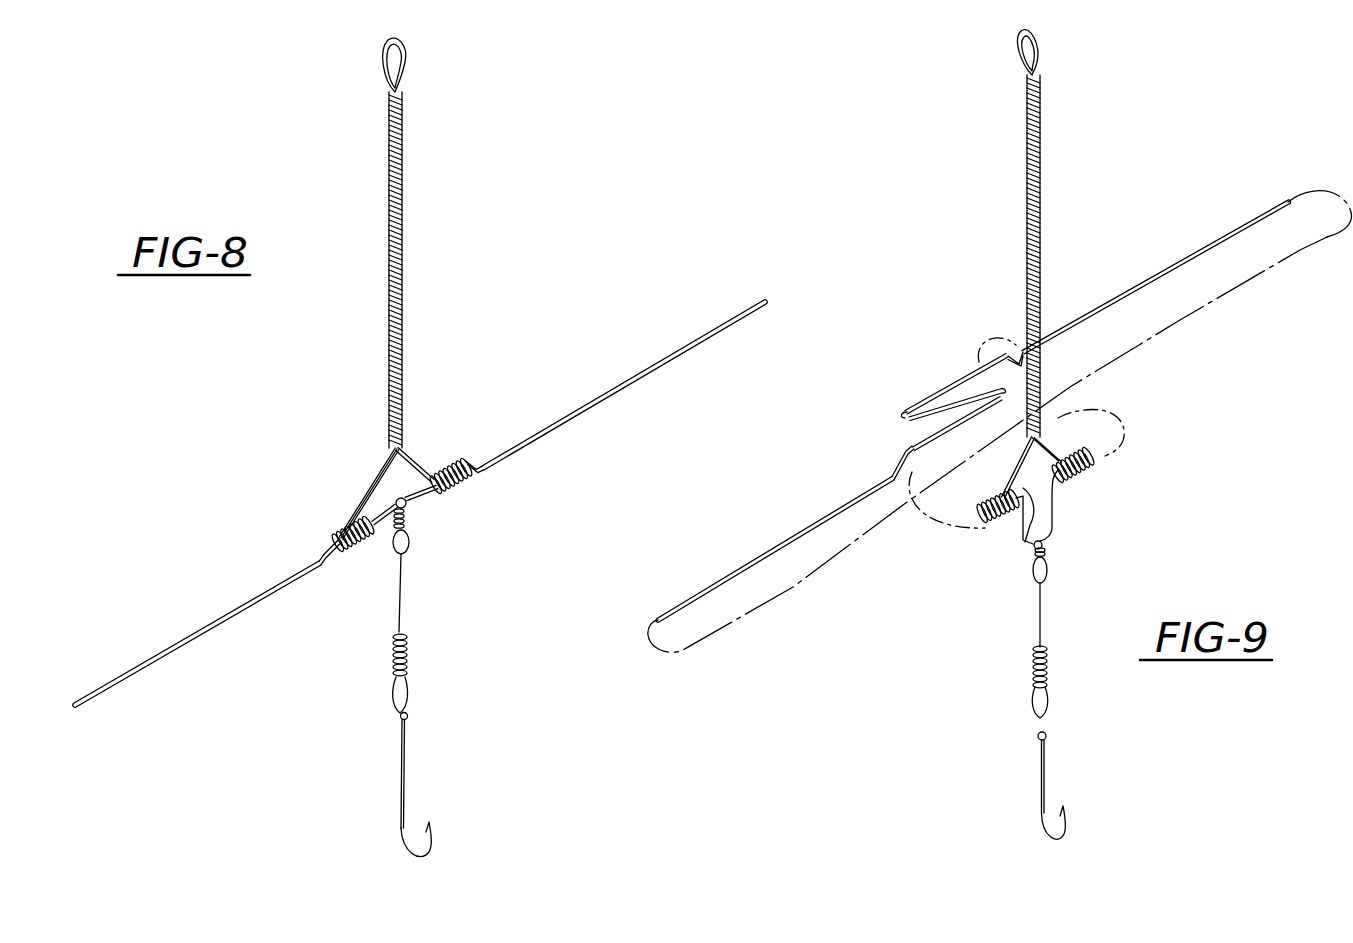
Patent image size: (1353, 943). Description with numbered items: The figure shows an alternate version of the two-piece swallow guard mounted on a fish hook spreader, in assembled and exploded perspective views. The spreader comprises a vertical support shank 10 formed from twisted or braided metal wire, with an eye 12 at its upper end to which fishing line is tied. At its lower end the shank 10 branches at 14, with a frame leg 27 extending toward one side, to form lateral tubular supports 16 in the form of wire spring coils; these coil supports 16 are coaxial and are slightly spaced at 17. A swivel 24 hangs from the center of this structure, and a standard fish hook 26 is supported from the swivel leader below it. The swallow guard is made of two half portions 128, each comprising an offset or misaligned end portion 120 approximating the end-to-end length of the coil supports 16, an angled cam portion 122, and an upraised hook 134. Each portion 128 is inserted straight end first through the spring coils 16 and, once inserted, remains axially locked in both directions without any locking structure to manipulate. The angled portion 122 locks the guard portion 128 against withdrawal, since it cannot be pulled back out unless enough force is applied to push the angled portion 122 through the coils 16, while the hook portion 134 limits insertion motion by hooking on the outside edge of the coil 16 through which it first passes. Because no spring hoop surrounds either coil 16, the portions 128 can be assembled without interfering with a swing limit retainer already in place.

In FIG. 8, the vertical support shank 10 is at (403, 205).
In FIG. 9, the vertical support shank 10 is at (1040, 193).
In FIG. 8, the eye 12 is at (407, 62).
In FIG. 9, the eye 12 is at (1038, 48).
In FIG. 8, the branch point 14 is at (424, 457).
In FIG. 9, the branch point 14 is at (1032, 467).
In FIG. 9, the lateral tubular supports 16 is at (1086, 470).
In FIG. 8, the spacing between coil supports 17 is at (378, 527).
In FIG. 9, the spacing between coil supports 17 is at (1022, 522).
In FIG. 8, the swivel 24 is at (393, 553).
In FIG. 9, the swivel 24 is at (1049, 576).
In FIG. 8, the fish hook 26 is at (409, 752).
In FIG. 9, the fish hook 26 is at (1047, 760).
In FIG. 8, the frame leg 27 is at (396, 470).
In FIG. 8, the offset end portion 120 is at (377, 503).
In FIG. 9, the offset end portion 120 is at (980, 365).
In FIG. 8, the angled cam portion 122 is at (323, 556).
In FIG. 9, the angled cam portion 122 is at (1020, 360).
In FIG. 8, the swallow guard half portion 128 is at (261, 600).
In FIG. 9, the swallow guard half portion 128 is at (1207, 248).
In FIG. 8, the upraised hook 134 is at (341, 522).
In FIG. 9, the upraised hook 134 is at (947, 395).